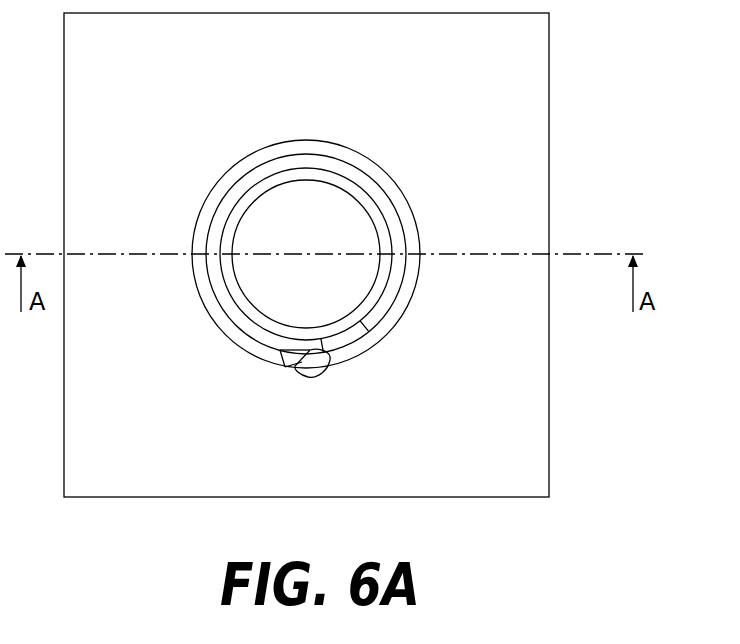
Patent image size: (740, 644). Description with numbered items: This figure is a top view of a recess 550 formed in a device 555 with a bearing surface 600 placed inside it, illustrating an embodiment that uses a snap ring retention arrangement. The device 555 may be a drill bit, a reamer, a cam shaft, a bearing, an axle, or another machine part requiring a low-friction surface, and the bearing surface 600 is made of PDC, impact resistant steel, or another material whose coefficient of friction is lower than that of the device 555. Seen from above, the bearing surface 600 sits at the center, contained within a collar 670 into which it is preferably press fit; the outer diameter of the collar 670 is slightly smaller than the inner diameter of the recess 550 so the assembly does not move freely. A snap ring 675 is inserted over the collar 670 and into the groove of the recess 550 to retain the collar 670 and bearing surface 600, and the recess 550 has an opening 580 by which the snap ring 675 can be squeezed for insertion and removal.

The device 555 is at (549, 128).
The bearing surface 600 is at (320, 230).
The collar 670 is at (313, 175).
The snap ring 675 is at (228, 206).
The recess 550 is at (348, 337).
The opening 580 is at (288, 360).